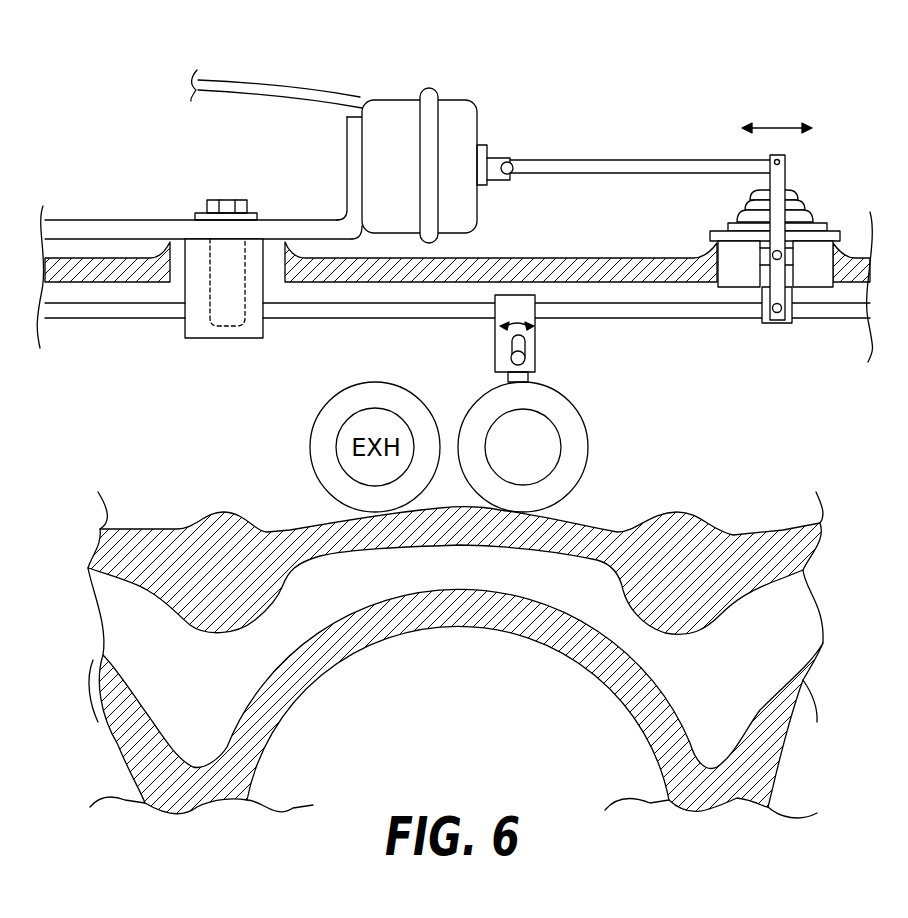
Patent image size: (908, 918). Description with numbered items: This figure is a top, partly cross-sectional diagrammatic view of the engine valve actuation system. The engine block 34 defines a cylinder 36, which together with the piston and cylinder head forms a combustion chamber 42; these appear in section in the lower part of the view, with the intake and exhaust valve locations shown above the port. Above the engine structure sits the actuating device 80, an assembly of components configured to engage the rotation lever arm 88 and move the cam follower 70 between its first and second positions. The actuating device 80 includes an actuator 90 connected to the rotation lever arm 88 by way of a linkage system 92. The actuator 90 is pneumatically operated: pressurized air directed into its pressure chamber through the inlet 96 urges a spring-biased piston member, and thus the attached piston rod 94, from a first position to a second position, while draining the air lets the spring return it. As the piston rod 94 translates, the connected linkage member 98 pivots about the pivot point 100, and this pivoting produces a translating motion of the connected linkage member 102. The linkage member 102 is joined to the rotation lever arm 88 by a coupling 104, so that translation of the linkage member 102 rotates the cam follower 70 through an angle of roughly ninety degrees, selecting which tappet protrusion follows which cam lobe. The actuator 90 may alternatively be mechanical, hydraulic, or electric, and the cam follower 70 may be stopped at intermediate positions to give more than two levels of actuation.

The engine block 34 is at (783, 733).
The cylinder 36 is at (293, 703).
The combustion chamber 42 is at (481, 757).
The cam follower 70 is at (563, 412).
The actuating device 80 is at (478, 101).
The rotation lever arm 88 is at (505, 362).
The actuator 90 is at (385, 120).
The linkage system 92 is at (805, 174).
The piston rod 94 is at (628, 158).
The inlet 96 is at (225, 88).
The linkage member 98 is at (762, 181).
The pivot point 100 is at (783, 255).
The linkage member 102 is at (715, 313).
The coupling 104 is at (530, 350).